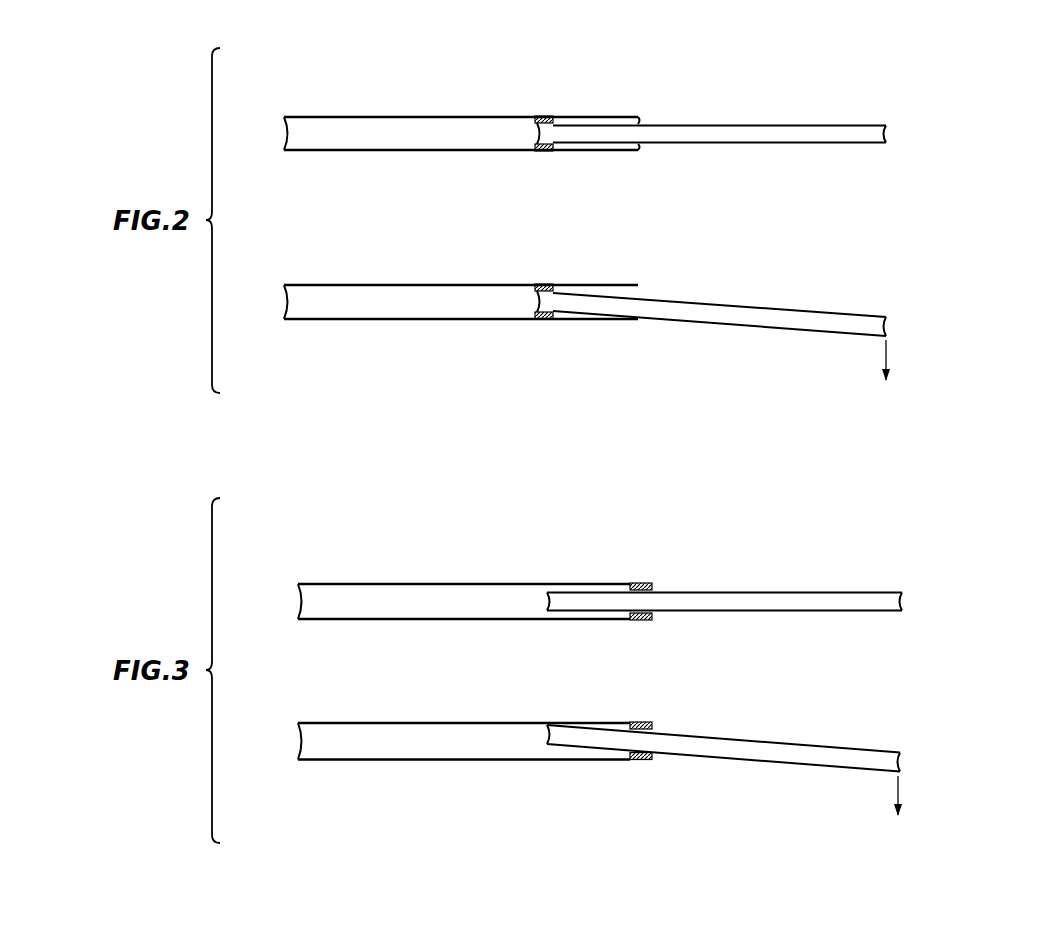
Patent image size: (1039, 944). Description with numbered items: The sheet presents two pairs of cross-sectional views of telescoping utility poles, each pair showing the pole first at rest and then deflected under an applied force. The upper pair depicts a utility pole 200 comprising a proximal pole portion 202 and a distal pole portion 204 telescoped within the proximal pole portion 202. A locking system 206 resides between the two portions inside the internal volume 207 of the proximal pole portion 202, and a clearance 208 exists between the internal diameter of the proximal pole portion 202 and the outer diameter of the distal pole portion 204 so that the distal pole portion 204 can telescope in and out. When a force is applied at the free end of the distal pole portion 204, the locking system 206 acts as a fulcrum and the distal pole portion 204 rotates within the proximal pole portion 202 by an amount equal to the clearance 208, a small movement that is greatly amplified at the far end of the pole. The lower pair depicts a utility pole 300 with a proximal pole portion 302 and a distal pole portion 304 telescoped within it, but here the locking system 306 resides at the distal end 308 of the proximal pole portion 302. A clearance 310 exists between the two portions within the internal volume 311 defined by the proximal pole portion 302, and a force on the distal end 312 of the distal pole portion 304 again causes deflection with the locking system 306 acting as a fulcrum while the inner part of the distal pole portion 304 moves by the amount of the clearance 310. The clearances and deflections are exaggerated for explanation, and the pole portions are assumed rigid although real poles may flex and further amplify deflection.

In FIG. 2, the utility pole 200 is at (895, 96).
In FIG. 2, the proximal pole portion 202 is at (356, 115).
In FIG. 2, the distal pole portion 204 is at (723, 124).
In FIG. 2, the locking system 206 is at (547, 116).
In FIG. 2, the internal volume 207 is at (400, 137).
In FIG. 2, the clearance 208 is at (650, 152).
In FIG. 3, the utility pole 300 is at (905, 557).
In FIG. 3, the proximal pole portion 302 is at (427, 582).
In FIG. 3, the distal pole portion 304 is at (728, 591).
In FIG. 3, the locking system 306 is at (642, 583).
In FIG. 3, the distal end 308 is at (640, 626).
In FIG. 3, the clearance 310 is at (536, 588).
In FIG. 3, the internal volume 311 is at (402, 603).
In FIG. 3, the distal end 312 is at (895, 750).